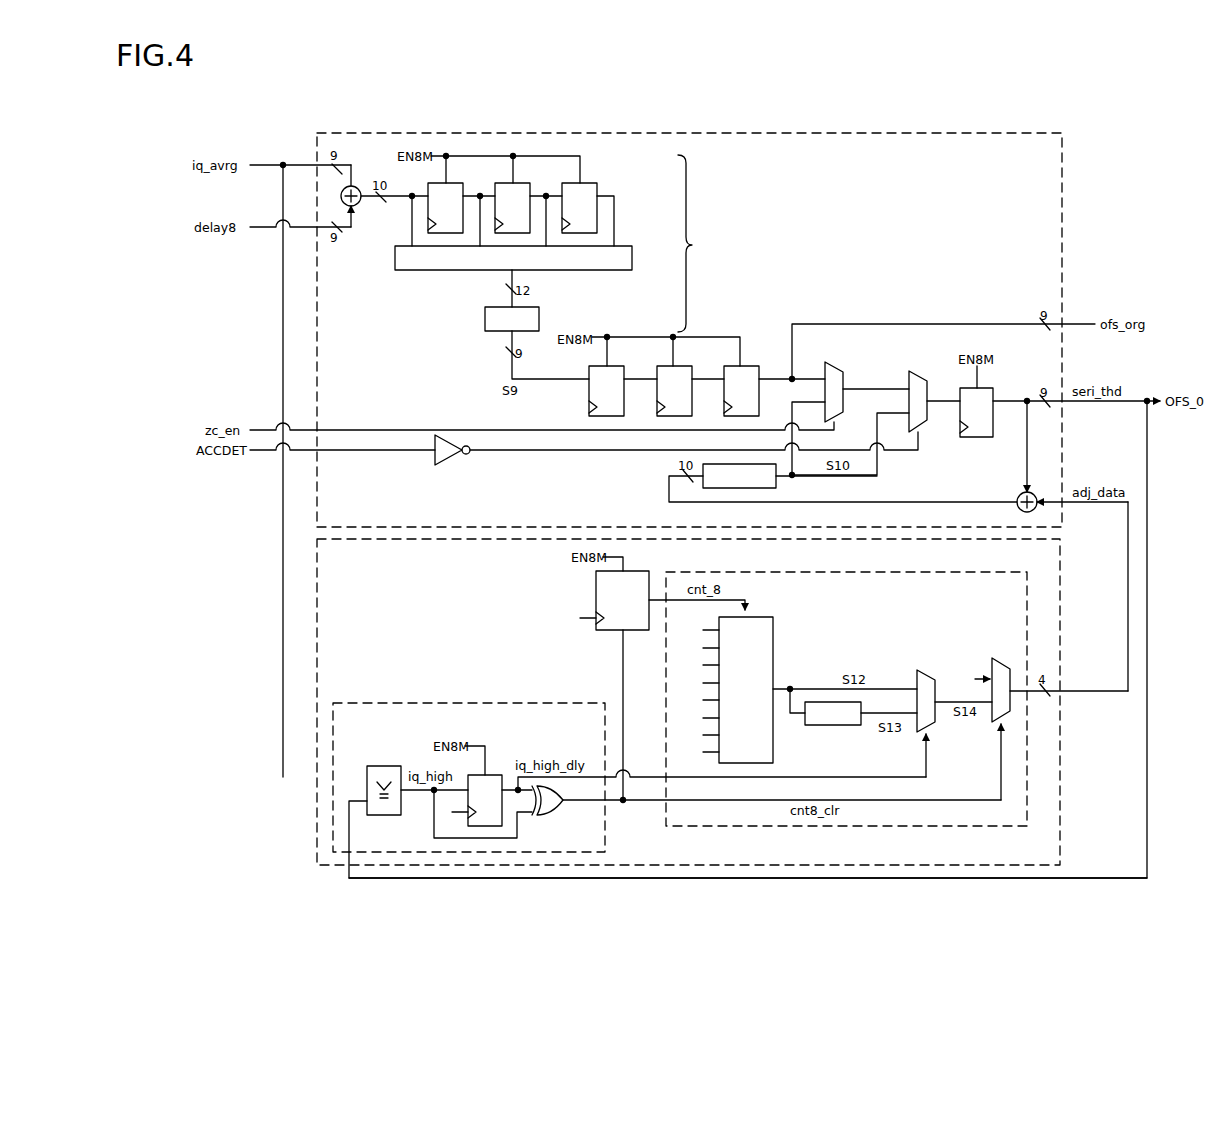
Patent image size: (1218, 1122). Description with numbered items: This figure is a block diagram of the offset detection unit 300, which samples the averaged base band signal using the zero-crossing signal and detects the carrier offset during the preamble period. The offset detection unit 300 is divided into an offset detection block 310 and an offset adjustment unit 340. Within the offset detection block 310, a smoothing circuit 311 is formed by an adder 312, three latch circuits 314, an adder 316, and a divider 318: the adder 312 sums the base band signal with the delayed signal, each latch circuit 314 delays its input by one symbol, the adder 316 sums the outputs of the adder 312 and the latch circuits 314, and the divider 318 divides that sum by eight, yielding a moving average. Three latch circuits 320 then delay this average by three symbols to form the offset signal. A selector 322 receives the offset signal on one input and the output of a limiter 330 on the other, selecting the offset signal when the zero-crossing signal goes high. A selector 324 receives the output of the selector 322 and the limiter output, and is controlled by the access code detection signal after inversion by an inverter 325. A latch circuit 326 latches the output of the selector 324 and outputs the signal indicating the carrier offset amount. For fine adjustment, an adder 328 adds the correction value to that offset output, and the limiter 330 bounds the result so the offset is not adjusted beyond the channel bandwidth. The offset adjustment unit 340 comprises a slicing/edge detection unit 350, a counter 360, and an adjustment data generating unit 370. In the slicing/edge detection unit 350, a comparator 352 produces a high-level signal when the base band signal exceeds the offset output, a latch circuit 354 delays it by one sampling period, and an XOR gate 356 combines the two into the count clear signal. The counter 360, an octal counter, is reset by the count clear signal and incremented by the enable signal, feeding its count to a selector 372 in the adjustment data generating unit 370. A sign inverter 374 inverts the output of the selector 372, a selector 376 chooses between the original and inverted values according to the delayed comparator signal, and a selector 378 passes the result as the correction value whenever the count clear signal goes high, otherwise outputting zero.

The offset detection unit 300 is at (1194, 886).
The offset detection block 310 is at (1062, 150).
The smoothing circuit 311 is at (700, 243).
The adder 312 is at (358, 204).
The latch circuit 314 is at (448, 180).
The adder 316 is at (632, 258).
The divider 318 is at (485, 322).
The latch circuit 320 is at (612, 363).
The selector 322 is at (834, 362).
The selector 324 is at (918, 371).
The inverter 325 is at (450, 459).
The latch circuit 326 is at (975, 437).
The adder 328 is at (1040, 494).
The limiter 330 is at (770, 488).
The offset adjustment unit 340 is at (1062, 555).
The slicing/edge detection unit 350 is at (458, 703).
The comparator 352 is at (386, 766).
The latch circuit 354 is at (494, 775).
The XOR gate 356 is at (548, 815).
The counter 360 is at (636, 630).
The adjustment data generating unit 370 is at (798, 572).
The selector 372 is at (773, 628).
The sign inverter 374 is at (832, 725).
The selector 376 is at (926, 670).
The selector 378 is at (1001, 658).